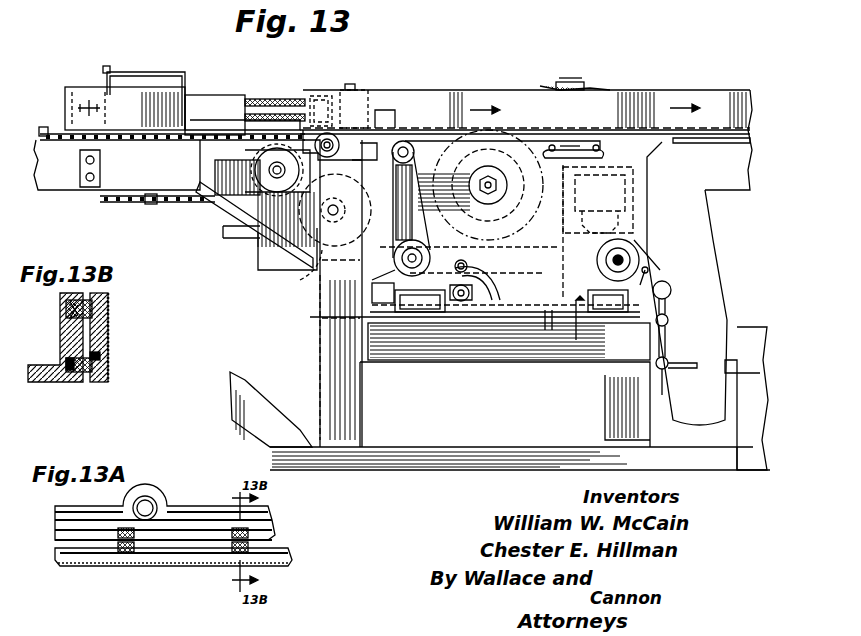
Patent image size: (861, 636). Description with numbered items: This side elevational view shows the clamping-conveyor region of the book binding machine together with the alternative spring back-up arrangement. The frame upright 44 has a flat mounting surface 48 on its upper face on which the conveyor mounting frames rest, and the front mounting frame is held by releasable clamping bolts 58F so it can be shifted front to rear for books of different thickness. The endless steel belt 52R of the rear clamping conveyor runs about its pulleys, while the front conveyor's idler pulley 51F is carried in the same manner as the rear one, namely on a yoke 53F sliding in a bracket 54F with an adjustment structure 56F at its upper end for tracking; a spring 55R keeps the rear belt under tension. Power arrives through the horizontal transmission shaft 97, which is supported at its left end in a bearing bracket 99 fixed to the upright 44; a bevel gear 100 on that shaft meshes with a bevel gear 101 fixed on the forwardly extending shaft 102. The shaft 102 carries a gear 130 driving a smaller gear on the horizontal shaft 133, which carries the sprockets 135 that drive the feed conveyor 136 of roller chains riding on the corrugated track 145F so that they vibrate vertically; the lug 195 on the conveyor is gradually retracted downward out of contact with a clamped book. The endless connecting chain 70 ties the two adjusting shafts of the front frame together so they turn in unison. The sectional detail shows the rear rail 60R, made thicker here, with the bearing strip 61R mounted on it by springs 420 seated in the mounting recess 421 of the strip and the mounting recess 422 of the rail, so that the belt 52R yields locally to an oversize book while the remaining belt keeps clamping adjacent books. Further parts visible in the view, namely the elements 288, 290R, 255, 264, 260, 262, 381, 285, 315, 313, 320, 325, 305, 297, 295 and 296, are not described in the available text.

In FIG. 13, the feed conveyor 136 is at (58, 133).
In FIG. 13, the lug 195 is at (42, 126).
In FIG. 13, the idler pulley 51F is at (88, 86).
In FIG. 13, the front screw 56F is at (108, 65).
In FIG. 13, the front bracket 53F is at (165, 76).
In FIG. 13, the front feed screw 54F is at (270, 96).
In FIG. 13, the spring 55R is at (322, 96).
In FIG. 13, the clamping bolts 58F is at (356, 84).
In FIG. 13, the mounting surfaces 48 is at (385, 128).
In FIG. 13, the cam block 288 is at (560, 78).
In FIG. 13, the rear rack 290R is at (588, 88).
In FIG. 13, the endless steel belt 52R is at (668, 95).
In FIG. 13B, the endless steel belt 52R is at (110, 340).
In FIG. 13A, the endless steel belt 52R is at (108, 568).
In FIG. 13, the corrugated track 145F is at (185, 140).
In FIG. 13, the sprockets 135 is at (252, 160).
In FIG. 13, the horizontal shaft 133 is at (250, 180).
In FIG. 13, the bearing bracket 99 is at (258, 246).
In FIG. 13, the bevel gear 100 is at (313, 242).
In FIG. 13, the bevel gear 101 is at (296, 268).
In FIG. 13, the forwardly extending shaft 102 is at (335, 212).
In FIG. 13, the endless connecting chain 70 is at (476, 151).
In FIG. 13, the transmission shaft 97 is at (400, 228).
In FIG. 13, the gear 130 is at (397, 258).
In FIG. 13, the roller 255 is at (396, 272).
In FIG. 13, the upright 44 is at (316, 313).
In FIG. 13, the hand wheel 264 is at (500, 145).
In FIG. 13, the shaft support 260 is at (548, 142).
In FIG. 13, the casing 262 is at (471, 232).
In FIG. 13, the lever arm 381 is at (470, 238).
In FIG. 13, the housing 285 is at (635, 195).
In FIG. 13, the link 315 is at (655, 265).
In FIG. 13, the control lever 313 is at (672, 300).
In FIG. 13, the table 320 is at (475, 323).
In FIG. 13, the slide 325 is at (550, 327).
In FIG. 13, the pin 305 is at (577, 340).
In FIG. 13, the clamp 297 is at (420, 320).
In FIG. 13, the bed 295 is at (505, 350).
In FIG. 13, the support 296 is at (612, 393).
In FIG. 13B, the rear rail 60R is at (62, 327).
In FIG. 13B, the bearing strip 61R is at (108, 318).
In FIG. 13B, the springs 420 is at (90, 300).
In FIG. 13A, the springs 420 is at (140, 548).
In FIG. 13B, the mounting recess 421 is at (108, 362).
In FIG. 13B, the mounting recess 422 is at (70, 384).